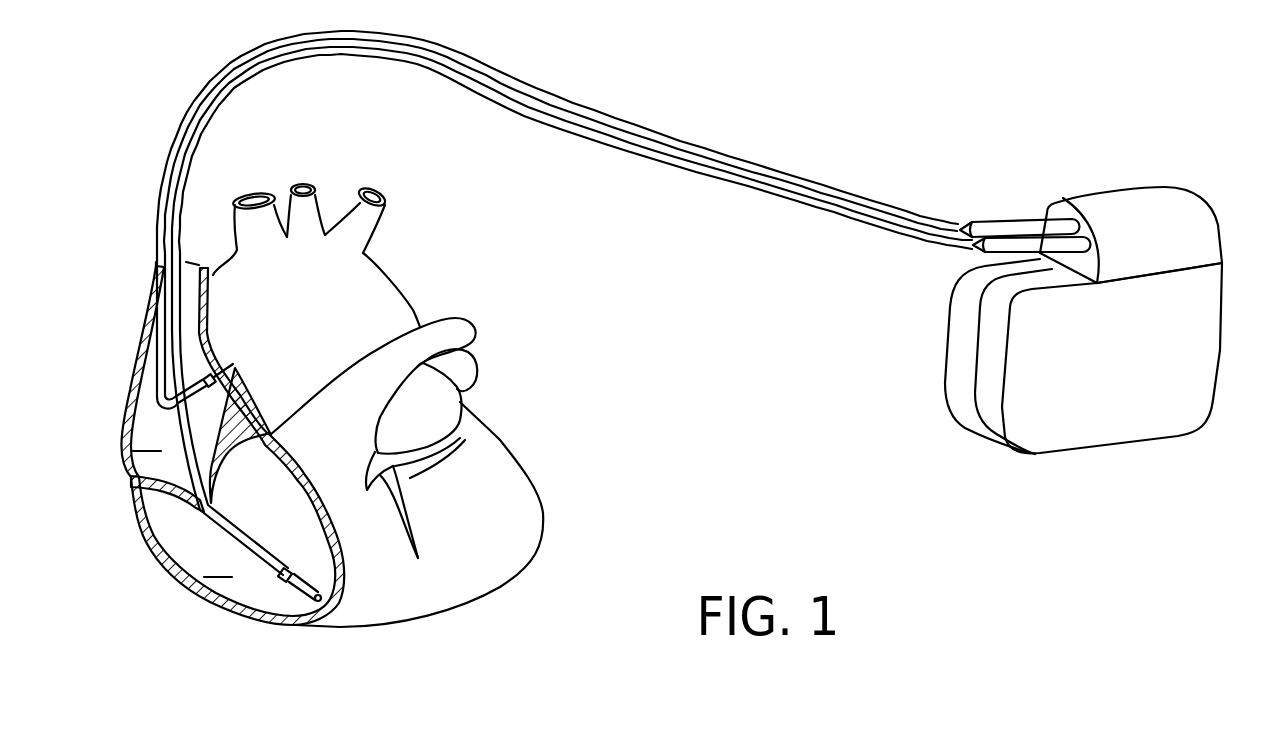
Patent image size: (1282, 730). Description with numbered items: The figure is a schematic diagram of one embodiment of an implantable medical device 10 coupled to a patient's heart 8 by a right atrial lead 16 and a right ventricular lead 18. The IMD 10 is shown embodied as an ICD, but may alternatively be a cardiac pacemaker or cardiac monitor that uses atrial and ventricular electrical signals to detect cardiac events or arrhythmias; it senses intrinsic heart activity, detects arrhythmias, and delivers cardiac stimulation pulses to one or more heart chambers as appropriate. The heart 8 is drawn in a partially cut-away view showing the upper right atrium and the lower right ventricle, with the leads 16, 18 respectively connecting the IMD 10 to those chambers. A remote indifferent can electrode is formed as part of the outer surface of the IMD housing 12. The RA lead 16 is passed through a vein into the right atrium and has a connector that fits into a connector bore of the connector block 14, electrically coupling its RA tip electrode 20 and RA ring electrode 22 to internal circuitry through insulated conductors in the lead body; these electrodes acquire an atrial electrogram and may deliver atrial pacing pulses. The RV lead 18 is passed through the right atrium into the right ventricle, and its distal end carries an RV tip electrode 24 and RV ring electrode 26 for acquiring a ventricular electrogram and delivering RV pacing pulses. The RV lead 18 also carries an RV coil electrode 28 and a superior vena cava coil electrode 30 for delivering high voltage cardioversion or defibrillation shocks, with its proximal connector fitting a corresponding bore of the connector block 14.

The heart 8 is at (530, 467).
The implantable medical device 10 is at (1220, 335).
The IMD housing 12 is at (1047, 440).
The connector block 14 is at (1135, 206).
The right atrial lead 16 is at (540, 87).
The right ventricular lead 18 is at (760, 200).
The RA tip electrode 20 is at (234, 362).
The RA ring electrode 22 is at (168, 322).
The RV tip electrode 24 is at (320, 600).
The RV ring electrode 26 is at (280, 583).
The RV coil electrode 28 is at (210, 523).
The superior vena cava coil electrode 30 is at (152, 272).